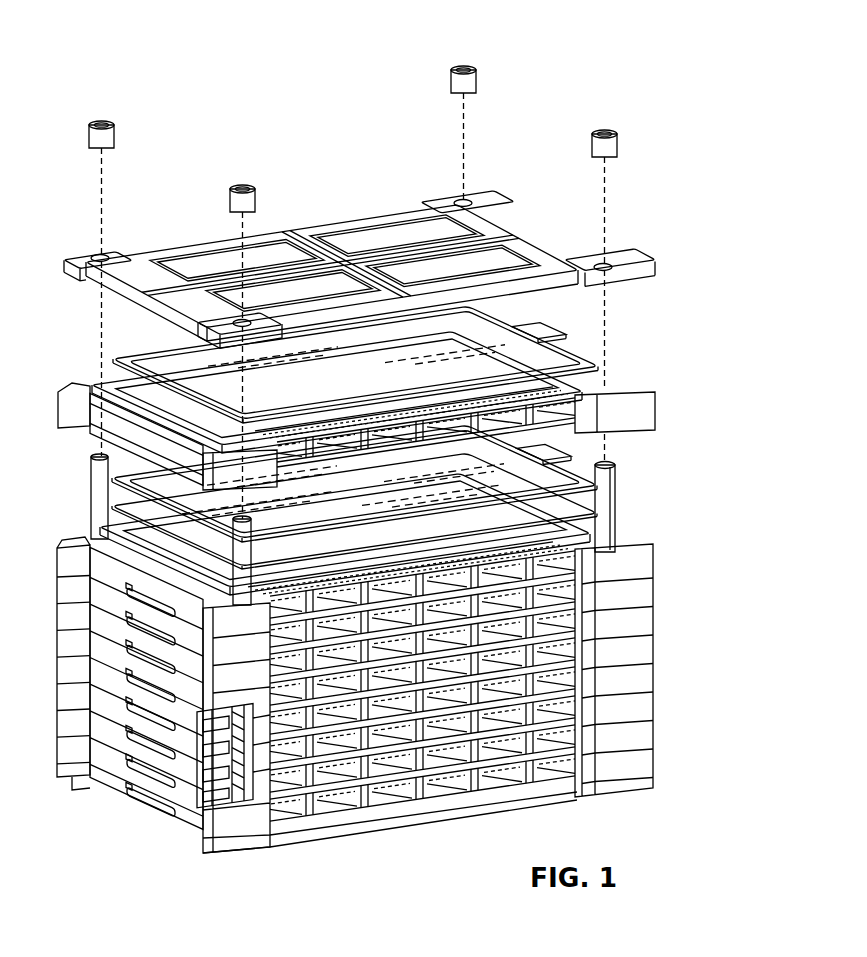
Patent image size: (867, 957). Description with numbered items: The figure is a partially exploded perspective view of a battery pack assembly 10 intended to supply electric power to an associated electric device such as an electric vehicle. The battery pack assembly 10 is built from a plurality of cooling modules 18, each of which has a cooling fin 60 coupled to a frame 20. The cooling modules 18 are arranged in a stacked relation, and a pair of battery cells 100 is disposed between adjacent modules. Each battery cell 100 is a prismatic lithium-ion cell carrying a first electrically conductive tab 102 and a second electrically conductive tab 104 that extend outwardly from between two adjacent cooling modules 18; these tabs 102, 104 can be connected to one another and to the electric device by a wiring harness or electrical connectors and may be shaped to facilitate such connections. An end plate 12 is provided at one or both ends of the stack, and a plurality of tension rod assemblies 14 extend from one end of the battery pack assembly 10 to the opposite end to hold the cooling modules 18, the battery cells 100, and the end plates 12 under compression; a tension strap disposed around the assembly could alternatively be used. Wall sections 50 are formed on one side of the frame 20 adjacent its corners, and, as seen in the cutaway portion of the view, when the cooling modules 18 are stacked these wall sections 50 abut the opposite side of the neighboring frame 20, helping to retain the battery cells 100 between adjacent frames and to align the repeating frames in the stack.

The battery pack assembly 10 is at (551, 97).
The end plate 12 is at (70, 262).
The tension rod assembly 14 is at (92, 492).
The cooling module 18 is at (65, 392).
The frame 20 is at (645, 410).
The wall section 50 is at (192, 584).
The cooling fin 60 is at (508, 390).
The battery cell 100 is at (143, 357).
The first electrically conductive tab 102 is at (135, 384).
The second electrically conductive tab 104 is at (562, 328).